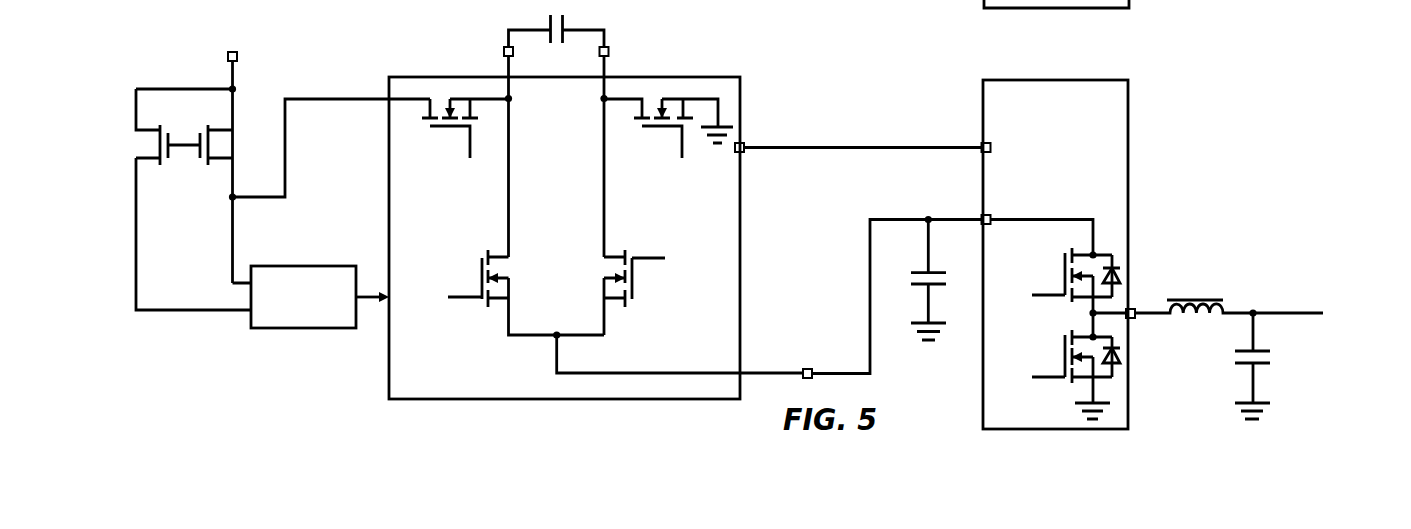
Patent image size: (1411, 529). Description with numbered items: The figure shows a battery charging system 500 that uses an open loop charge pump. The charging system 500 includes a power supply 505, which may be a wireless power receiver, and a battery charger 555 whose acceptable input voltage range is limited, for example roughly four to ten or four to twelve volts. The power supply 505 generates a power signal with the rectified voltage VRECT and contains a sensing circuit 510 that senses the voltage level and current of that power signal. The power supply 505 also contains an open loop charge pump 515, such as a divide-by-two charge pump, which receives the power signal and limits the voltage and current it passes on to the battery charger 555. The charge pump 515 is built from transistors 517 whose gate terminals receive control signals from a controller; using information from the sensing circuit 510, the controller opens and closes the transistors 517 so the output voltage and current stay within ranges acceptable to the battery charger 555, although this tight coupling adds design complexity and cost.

The battery charging system 500 is at (1324, 84).
The power supply 505 is at (772, 71).
The sensing circuit 510 is at (293, 266).
The open loop charge pump 515 is at (669, 76).
The transistors 517 is at (457, 132).
The battery charger 555 is at (1139, 44).